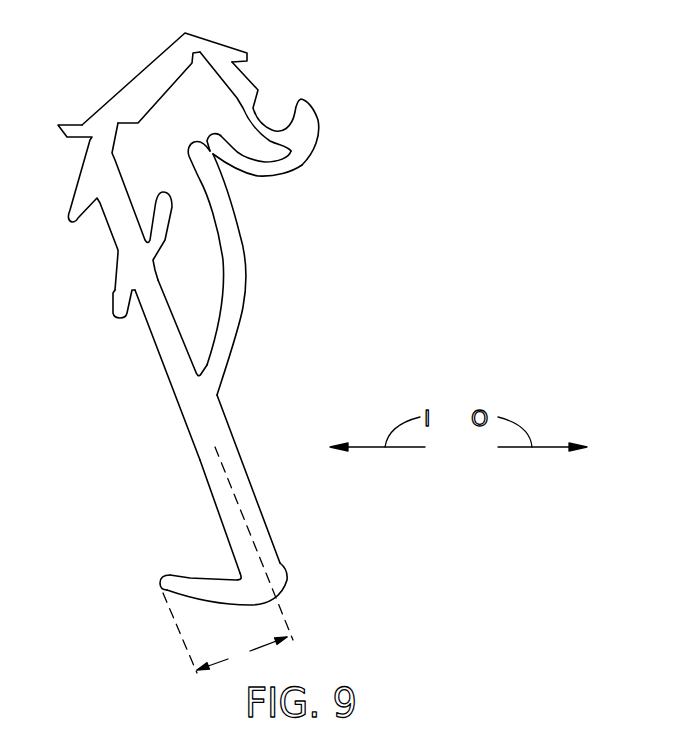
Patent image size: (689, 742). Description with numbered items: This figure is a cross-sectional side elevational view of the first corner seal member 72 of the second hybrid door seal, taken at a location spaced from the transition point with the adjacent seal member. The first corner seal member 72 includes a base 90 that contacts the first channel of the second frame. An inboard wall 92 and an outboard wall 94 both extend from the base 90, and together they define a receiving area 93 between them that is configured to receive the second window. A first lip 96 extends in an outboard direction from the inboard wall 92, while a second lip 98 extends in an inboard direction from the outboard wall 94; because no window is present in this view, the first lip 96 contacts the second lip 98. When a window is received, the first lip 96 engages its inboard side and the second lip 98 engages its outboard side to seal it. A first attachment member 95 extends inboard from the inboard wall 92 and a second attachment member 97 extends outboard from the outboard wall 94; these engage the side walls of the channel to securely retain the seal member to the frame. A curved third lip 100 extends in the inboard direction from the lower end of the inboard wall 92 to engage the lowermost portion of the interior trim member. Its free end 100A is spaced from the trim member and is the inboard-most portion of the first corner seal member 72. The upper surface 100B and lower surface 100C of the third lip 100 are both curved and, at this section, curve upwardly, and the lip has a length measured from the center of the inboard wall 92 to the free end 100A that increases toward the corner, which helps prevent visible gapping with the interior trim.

The base 90 is at (134, 76).
The second attachment member 97 is at (227, 45).
The outboard wall 94 is at (257, 92).
The second lip 98 is at (279, 178).
The receiving area 93 is at (243, 183).
The first lip 96 is at (248, 303).
The first attachment member 95 is at (112, 305).
The inboard wall 92 is at (165, 380).
The first corner seal member 72 is at (182, 445).
The third lip 100 is at (160, 583).
The free end 100A is at (163, 575).
The upper surface 100B is at (198, 573).
The lower surface 100C is at (205, 603).